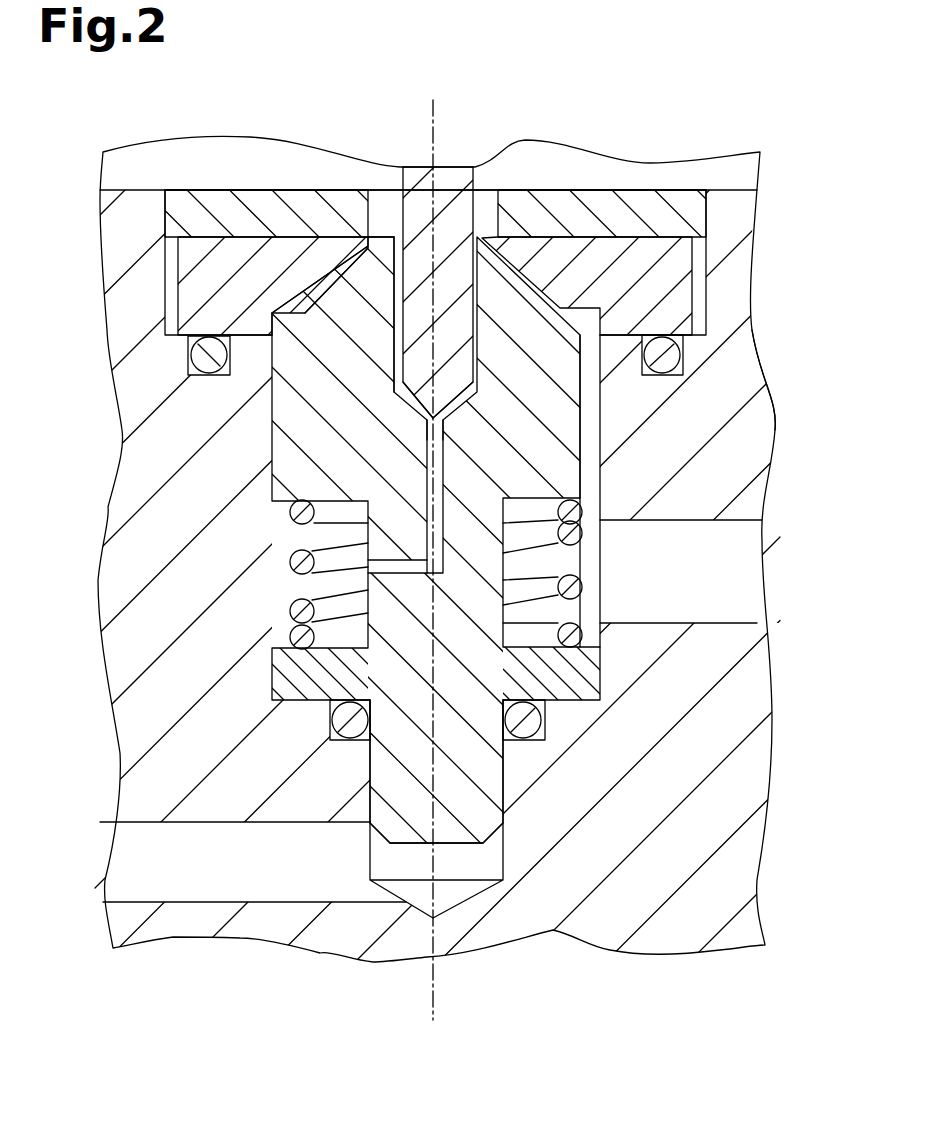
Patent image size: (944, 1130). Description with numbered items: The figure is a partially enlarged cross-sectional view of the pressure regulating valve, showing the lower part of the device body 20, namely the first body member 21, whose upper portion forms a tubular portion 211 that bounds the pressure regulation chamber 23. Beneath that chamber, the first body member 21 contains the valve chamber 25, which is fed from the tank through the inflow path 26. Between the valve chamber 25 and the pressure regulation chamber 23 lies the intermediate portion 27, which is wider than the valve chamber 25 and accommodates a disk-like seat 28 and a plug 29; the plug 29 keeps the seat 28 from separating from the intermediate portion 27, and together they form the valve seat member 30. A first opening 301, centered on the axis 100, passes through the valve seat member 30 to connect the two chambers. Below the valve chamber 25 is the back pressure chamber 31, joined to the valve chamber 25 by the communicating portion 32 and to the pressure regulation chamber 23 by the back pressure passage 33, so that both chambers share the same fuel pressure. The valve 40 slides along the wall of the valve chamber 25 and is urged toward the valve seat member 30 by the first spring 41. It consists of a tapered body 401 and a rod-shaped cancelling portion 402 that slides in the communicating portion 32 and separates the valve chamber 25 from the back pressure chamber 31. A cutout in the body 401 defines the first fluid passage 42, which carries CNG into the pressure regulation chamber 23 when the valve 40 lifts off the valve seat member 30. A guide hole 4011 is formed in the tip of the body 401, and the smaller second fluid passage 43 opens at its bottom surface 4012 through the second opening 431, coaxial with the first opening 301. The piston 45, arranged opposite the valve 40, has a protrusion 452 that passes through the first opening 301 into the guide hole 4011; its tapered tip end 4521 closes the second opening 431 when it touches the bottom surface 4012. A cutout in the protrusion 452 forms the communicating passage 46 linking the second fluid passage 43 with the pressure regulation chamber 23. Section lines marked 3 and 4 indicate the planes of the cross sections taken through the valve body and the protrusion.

The axis 100 is at (437, 1012).
The device body 20 is at (435, 549).
The first body member 21 is at (100, 598).
The tubular portion 211 is at (746, 272).
The pressure regulation chamber 23 is at (582, 185).
The valve chamber 25 is at (582, 557).
The inflow path 26 is at (744, 622).
The intermediate portion 27 is at (176, 199).
The seat 28 is at (178, 277).
The plug 29 is at (165, 206).
The valve seat member 30 is at (354, 262).
The first opening 301 is at (379, 203).
The back pressure chamber 31 is at (456, 845).
The communicating portion 32 is at (498, 782).
The back pressure passage 33 is at (108, 898).
The valve 40 is at (431, 540).
The body 401 is at (598, 394).
The cancelling portion 402 is at (490, 673).
The guide hole 4011 is at (446, 168).
The bottom surface 4012 is at (394, 392).
The first spring 41 is at (582, 589).
The first fluid passage 42 is at (593, 445).
The second fluid passage 43 is at (393, 578).
The second opening 431 is at (443, 404).
The piston 45 is at (478, 268).
The protrusion 452 is at (482, 262).
The tip end 4521 is at (430, 418).
The communicating passage 46 is at (394, 312).
The section line III 3 is at (252, 430).
The section line IV 4 is at (388, 318).